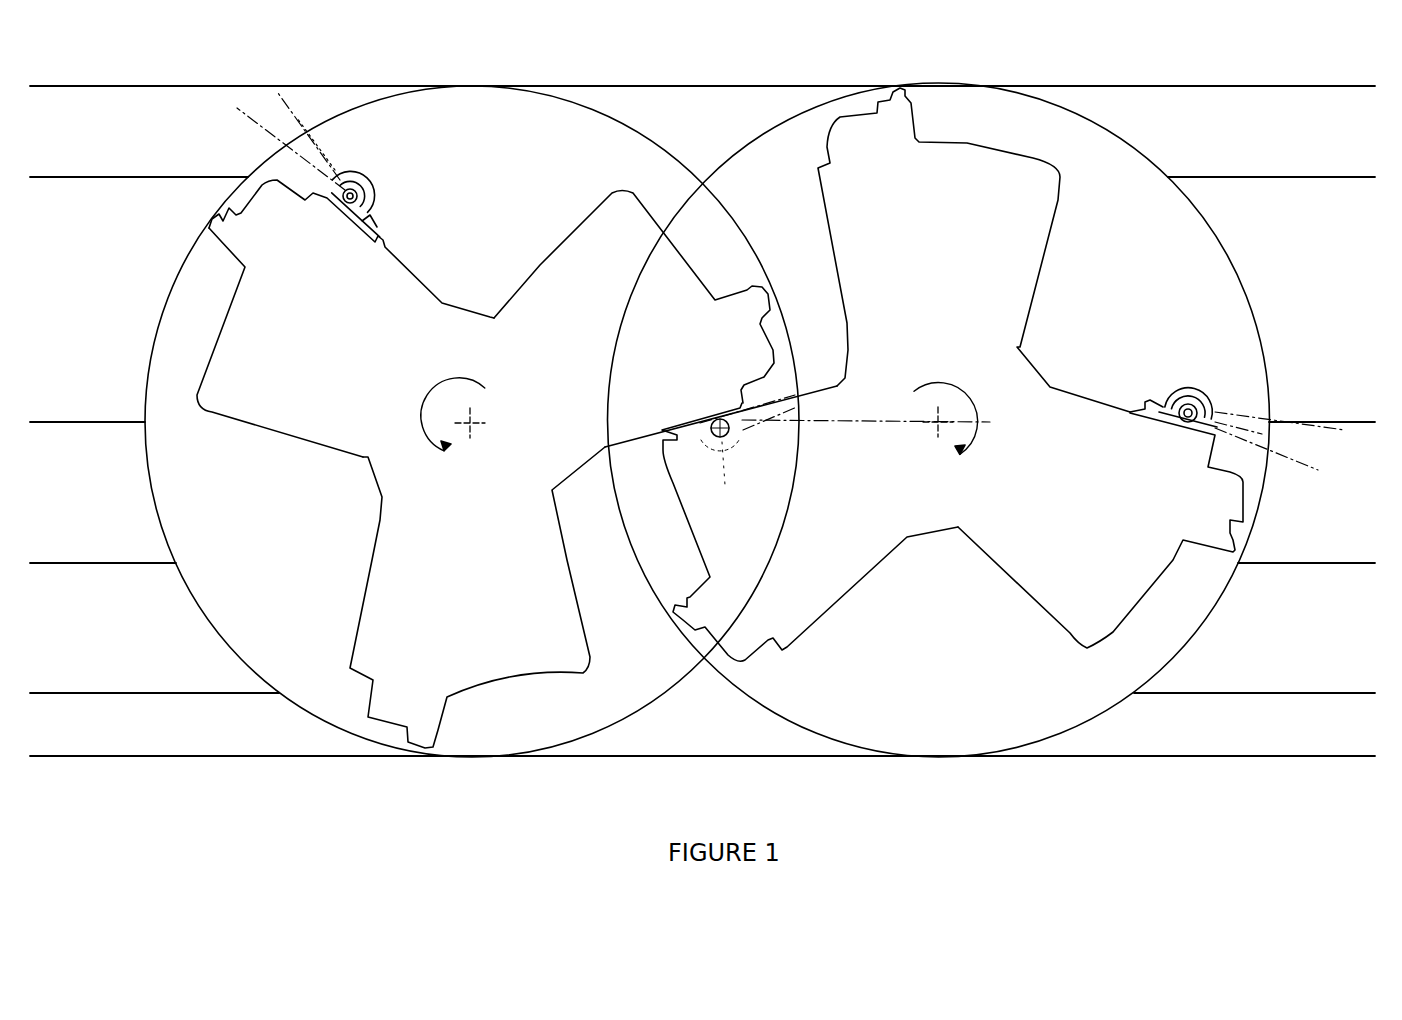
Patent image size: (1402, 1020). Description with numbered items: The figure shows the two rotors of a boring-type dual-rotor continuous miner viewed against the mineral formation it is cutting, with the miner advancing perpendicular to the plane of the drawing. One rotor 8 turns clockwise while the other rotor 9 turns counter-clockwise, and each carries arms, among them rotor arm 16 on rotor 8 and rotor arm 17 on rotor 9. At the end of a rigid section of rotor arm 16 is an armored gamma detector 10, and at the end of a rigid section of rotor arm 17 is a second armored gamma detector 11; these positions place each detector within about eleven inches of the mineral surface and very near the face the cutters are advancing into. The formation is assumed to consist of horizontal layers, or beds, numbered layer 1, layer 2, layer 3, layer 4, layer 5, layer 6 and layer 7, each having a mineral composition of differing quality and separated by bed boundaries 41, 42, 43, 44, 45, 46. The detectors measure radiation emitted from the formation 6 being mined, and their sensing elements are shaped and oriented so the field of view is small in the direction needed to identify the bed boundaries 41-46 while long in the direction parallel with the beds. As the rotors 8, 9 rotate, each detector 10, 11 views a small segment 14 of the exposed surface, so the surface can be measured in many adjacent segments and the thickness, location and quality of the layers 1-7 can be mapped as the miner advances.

The layer 1 is at (727, 31).
The layer 2 is at (1288, 133).
The layer 3 is at (1343, 296).
The layer 4 is at (1359, 487).
The layer 5 is at (1312, 631).
The layer 6 is at (1257, 723).
The layer 7 is at (730, 797).
The rotor 8 is at (952, 374).
The rotor 9 is at (517, 447).
The detector 10 is at (1181, 391).
The detector 11 is at (373, 178).
The segment 14 is at (791, 281).
The rotor arm 16 is at (1100, 491).
The rotor arm 17 is at (345, 318).
The bed boundary 41 is at (1156, 82).
The bed boundary 42 is at (1199, 176).
The bed boundary 43 is at (1335, 420).
The bed boundary 44 is at (1274, 561).
The bed boundary 45 is at (1209, 692).
The bed boundary 46 is at (1136, 755).